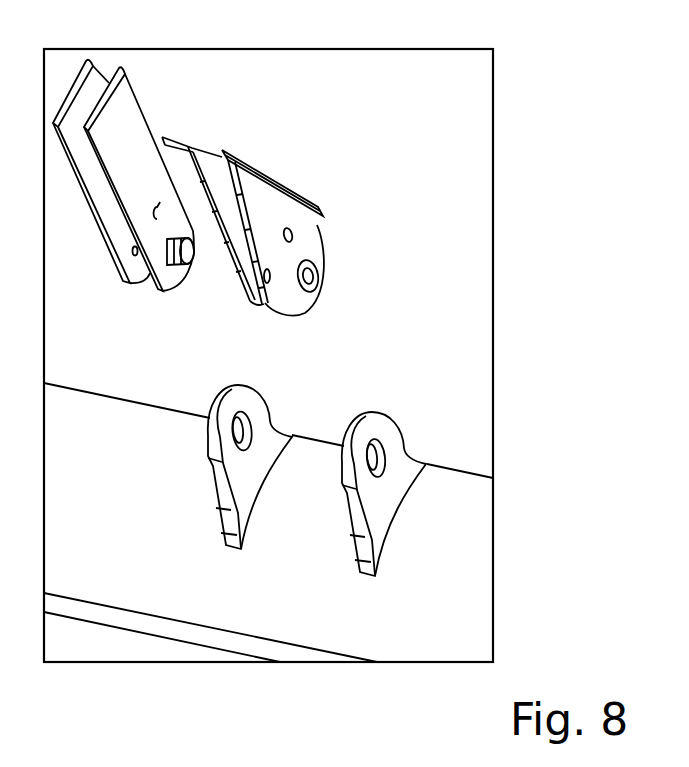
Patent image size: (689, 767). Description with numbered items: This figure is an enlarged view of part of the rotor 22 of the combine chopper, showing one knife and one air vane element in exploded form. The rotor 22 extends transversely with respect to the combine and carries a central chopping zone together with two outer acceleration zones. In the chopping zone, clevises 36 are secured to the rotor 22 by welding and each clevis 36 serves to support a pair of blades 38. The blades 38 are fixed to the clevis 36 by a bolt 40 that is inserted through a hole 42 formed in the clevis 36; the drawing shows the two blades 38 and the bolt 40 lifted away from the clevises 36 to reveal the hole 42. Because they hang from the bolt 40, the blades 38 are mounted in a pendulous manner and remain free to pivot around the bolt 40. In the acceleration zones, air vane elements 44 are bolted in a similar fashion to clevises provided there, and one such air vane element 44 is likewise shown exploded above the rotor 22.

The rotor 22 is at (462, 478).
The clevis 36 is at (286, 437).
The blade 38 is at (124, 73).
The bolt 40 is at (197, 265).
The hole 42 is at (252, 408).
The air vane element 44 is at (204, 150).